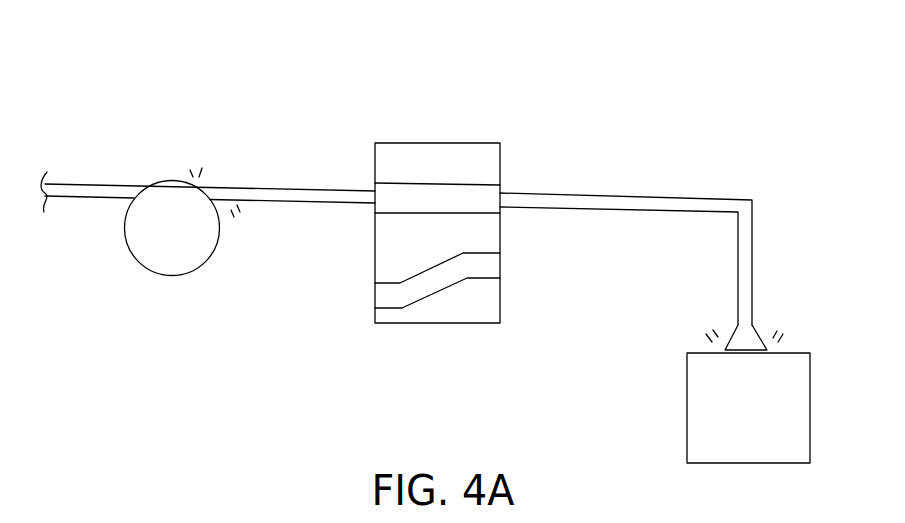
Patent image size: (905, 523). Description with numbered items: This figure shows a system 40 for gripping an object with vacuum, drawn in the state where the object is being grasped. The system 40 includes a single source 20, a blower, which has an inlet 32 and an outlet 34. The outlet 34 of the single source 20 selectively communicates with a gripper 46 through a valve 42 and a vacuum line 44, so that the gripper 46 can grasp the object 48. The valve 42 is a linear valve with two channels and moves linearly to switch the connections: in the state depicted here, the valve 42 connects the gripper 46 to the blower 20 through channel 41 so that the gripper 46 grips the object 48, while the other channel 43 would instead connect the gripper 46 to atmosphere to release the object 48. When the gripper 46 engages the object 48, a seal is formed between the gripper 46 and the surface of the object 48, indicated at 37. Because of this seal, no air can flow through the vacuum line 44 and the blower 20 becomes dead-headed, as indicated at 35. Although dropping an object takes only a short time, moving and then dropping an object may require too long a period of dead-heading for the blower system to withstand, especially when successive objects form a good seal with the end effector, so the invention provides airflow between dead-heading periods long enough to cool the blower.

The single source 20 is at (172, 276).
The inlet 32 is at (270, 190).
The outlet 34 is at (102, 184).
The dead-headed condition 35 is at (242, 225).
The seal 37 is at (785, 333).
The system 40 is at (577, 75).
The channel 41 is at (410, 214).
The valve 42 is at (438, 143).
The channel 43 is at (433, 294).
The vacuum line 44 is at (628, 195).
The gripper 46 is at (736, 326).
The object 48 is at (810, 392).